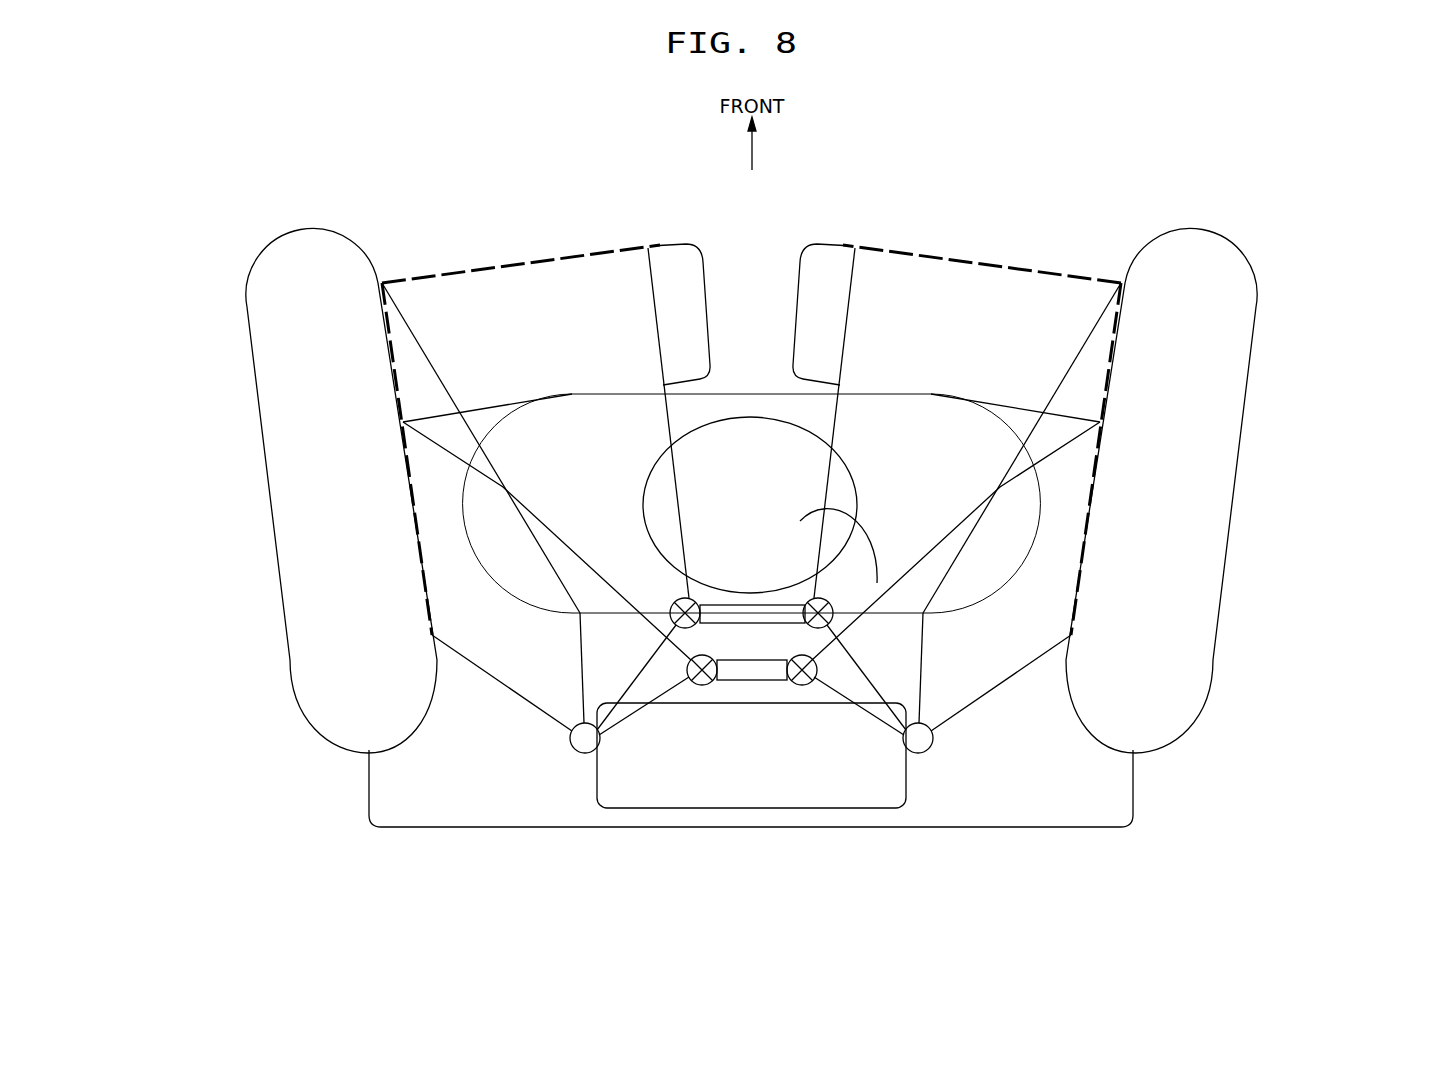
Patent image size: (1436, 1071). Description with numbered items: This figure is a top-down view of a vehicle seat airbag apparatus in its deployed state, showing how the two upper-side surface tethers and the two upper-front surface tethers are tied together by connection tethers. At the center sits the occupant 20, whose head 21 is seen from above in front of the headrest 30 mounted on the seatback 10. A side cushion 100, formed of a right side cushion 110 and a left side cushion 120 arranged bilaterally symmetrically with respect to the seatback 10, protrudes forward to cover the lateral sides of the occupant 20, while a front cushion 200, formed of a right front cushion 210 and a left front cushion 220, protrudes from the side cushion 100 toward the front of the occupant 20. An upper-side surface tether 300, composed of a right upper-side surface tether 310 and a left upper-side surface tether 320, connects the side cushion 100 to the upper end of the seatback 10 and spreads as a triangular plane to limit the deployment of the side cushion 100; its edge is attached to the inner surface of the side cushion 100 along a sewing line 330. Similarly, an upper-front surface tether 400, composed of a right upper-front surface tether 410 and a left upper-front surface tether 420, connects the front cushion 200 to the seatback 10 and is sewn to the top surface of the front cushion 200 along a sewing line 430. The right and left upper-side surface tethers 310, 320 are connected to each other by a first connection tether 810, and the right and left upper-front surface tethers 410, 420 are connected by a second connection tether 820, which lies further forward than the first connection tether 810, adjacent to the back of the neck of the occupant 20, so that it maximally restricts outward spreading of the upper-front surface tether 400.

The seatback 10 is at (1020, 785).
The occupant 20 is at (743, 405).
The head 21 is at (877, 583).
The headrest 30 is at (650, 795).
The side cushion 100 is at (756, 490).
The right side cushion 110 is at (1223, 442).
The left side cushion 120 is at (282, 442).
The front cushion 200 is at (756, 379).
The right front cushion 210 is at (828, 253).
The left front cushion 220 is at (675, 253).
The upper-side surface tether 300 is at (750, 573).
The right upper-side surface tether 310 is at (1032, 615).
The left upper-side surface tether 320 is at (470, 618).
The sewing line 330 is at (410, 542).
The upper-front surface tether 400 is at (756, 370).
The right upper-front surface tether 410 is at (1047, 317).
The left upper-front surface tether 420 is at (456, 317).
The sewing line 430 is at (536, 258).
The first connection tether 810 is at (772, 667).
The second connection tether 820 is at (725, 615).